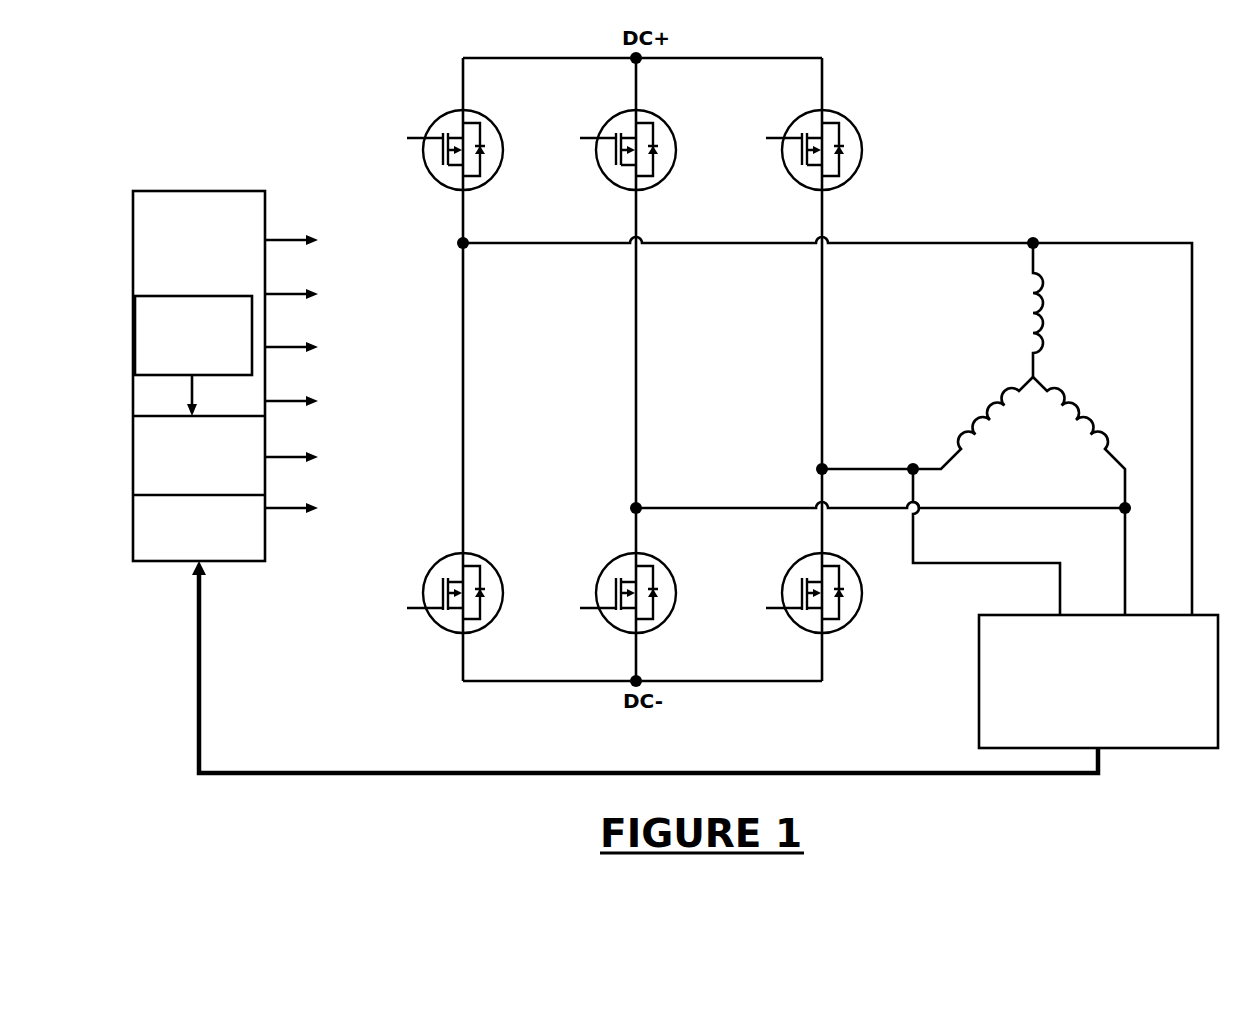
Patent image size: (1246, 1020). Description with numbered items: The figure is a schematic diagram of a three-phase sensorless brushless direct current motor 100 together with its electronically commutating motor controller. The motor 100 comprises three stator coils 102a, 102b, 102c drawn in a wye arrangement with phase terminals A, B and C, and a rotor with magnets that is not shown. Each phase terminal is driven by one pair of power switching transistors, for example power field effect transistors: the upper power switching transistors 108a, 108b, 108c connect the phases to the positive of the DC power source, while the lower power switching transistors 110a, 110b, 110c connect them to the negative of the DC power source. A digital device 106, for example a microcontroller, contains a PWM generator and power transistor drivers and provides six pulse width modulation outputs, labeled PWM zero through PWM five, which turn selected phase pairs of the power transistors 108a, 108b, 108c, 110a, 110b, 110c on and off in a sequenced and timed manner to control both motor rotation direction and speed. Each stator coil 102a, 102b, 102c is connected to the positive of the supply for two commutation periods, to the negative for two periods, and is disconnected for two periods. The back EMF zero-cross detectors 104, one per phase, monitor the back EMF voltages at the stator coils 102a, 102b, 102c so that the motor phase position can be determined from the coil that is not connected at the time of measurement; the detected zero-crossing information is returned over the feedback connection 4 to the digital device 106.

The zero-cross feedback signal line 4 is at (230, 788).
The three-phase sensorless brushless direct current motor 100 is at (989, 429).
The stator coil 102a is at (1033, 312).
The stator coil 102b is at (1093, 418).
The stator coil 102c is at (1006, 407).
The back EMF zero-cross detectors 104 is at (1172, 748).
The digital device 106 is at (228, 190).
The power switching transistor 108a is at (495, 125).
The power switching transistor 108b is at (668, 125).
The power switching transistor 108c is at (854, 125).
The power switching transistor 110a is at (497, 571).
The power switching transistor 110b is at (670, 571).
The power switching transistor 110c is at (851, 622).